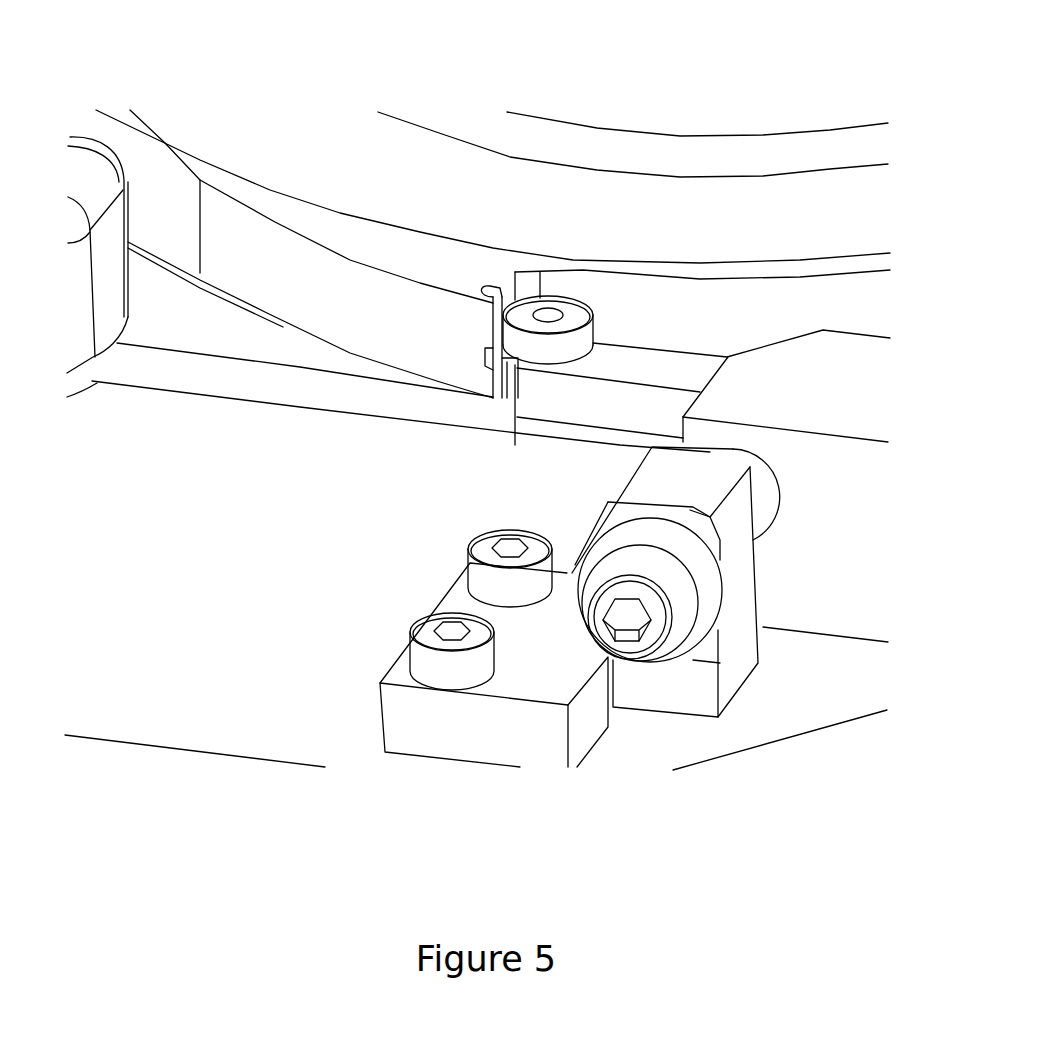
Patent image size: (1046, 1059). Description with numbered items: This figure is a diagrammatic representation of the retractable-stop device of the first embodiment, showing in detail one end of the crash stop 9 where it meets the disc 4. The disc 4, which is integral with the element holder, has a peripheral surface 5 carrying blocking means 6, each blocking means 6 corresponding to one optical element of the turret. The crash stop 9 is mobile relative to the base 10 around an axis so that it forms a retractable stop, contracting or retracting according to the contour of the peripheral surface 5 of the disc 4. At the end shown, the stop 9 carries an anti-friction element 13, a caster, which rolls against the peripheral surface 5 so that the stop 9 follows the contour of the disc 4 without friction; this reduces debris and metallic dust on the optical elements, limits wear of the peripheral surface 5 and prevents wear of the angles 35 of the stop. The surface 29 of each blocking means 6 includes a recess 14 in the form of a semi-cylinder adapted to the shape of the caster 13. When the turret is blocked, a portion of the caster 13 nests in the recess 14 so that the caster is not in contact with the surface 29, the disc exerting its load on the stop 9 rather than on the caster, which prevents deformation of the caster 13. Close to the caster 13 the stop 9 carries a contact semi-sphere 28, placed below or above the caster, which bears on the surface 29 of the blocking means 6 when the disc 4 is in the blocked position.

The disc 4 is at (331, 138).
The peripheral surface 5 is at (833, 300).
The blocking means 6 is at (472, 292).
The crash stop 9 is at (633, 367).
The base 10 is at (223, 757).
The anti-friction element 13 is at (573, 310).
The recess 14 is at (503, 310).
The contact semi-sphere 28 is at (487, 348).
The surface of the blocking means 29 is at (520, 362).
The angles of the stop 35 is at (517, 443).